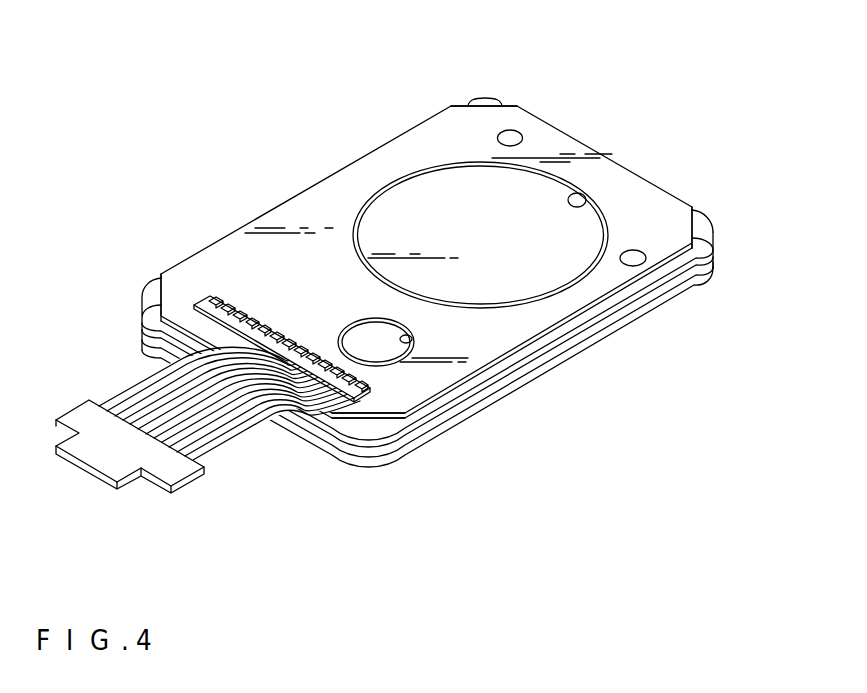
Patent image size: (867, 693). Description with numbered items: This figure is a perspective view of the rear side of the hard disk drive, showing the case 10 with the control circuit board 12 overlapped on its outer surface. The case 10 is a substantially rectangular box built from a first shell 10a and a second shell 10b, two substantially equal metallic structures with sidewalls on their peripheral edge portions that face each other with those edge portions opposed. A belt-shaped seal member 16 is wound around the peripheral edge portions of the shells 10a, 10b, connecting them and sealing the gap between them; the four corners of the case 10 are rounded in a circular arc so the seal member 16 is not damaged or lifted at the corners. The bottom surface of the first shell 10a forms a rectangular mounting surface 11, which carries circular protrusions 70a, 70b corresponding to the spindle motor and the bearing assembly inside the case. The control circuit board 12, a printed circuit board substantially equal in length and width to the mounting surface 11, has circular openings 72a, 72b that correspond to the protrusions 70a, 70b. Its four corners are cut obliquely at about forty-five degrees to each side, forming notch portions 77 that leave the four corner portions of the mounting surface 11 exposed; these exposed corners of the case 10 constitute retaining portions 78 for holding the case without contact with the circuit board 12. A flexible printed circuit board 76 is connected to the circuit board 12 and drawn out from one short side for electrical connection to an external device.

The case 10 is at (537, 394).
The first shell 10a is at (497, 397).
The second shell 10b is at (454, 396).
The mounting surface 11 is at (563, 322).
The control circuit board 12 is at (332, 188).
The seal member 16 is at (642, 303).
The circular protrusion 70a is at (427, 185).
The circular protrusion 70b is at (356, 336).
The circular opening 72a is at (583, 198).
The circular opening 72b is at (412, 339).
The flexible printed circuit board 76 is at (220, 433).
The notch portion 77 is at (498, 102).
The retaining portion 78 is at (468, 98).